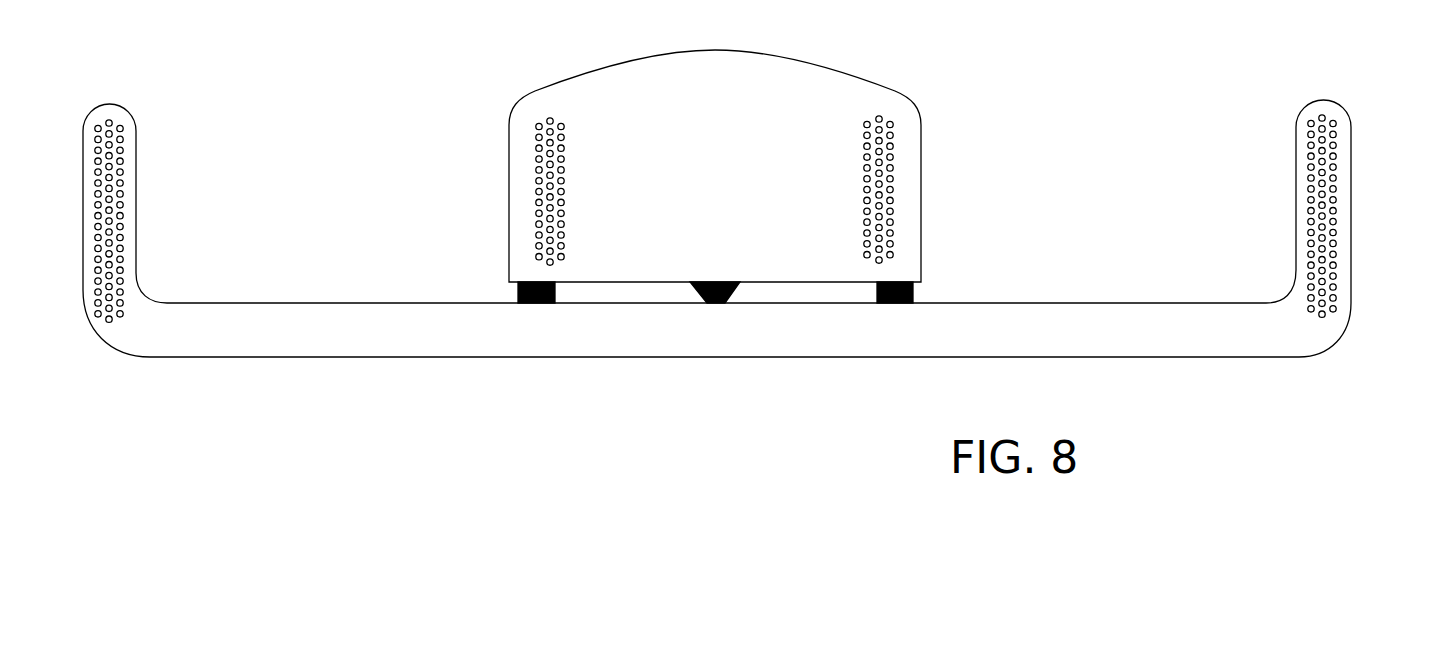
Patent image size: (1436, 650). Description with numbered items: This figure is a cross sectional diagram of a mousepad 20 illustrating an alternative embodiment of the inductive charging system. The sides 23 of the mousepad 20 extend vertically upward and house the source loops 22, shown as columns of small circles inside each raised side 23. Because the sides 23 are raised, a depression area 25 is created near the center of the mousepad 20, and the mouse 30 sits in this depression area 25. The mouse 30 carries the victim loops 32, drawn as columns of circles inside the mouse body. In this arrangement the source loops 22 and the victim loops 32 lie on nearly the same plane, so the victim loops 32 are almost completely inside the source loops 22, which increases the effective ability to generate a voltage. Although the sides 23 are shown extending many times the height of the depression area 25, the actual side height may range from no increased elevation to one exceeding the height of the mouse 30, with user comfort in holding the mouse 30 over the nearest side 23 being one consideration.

The mousepad 20 is at (788, 332).
The source loops 22 is at (99, 229).
The sides 23 is at (126, 107).
The depression area 25 is at (291, 146).
The mouse 30 is at (736, 197).
The victim loops 32 is at (539, 192).